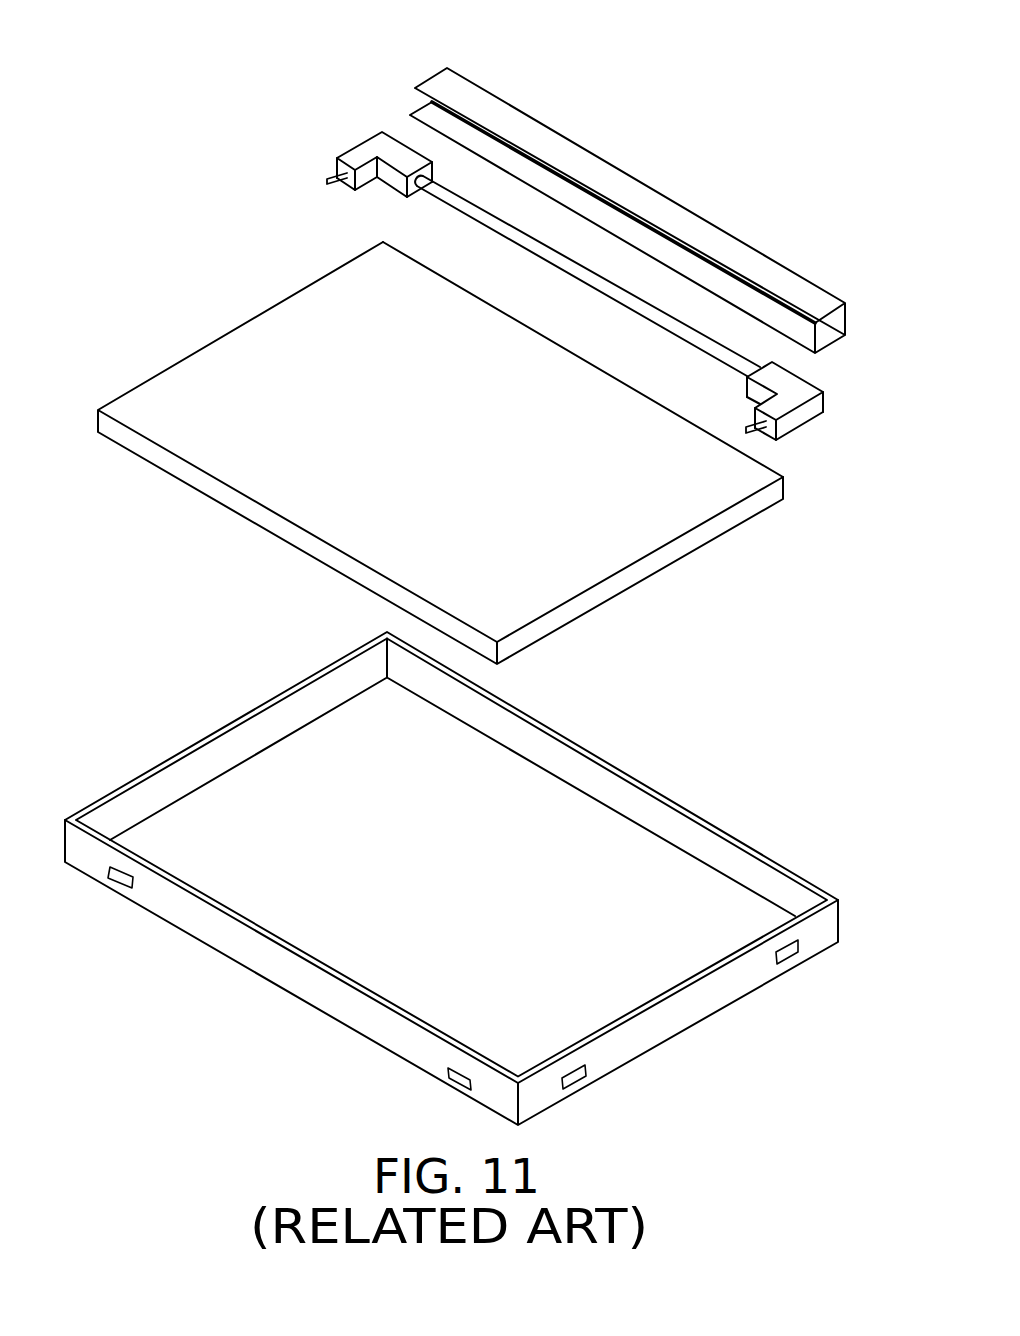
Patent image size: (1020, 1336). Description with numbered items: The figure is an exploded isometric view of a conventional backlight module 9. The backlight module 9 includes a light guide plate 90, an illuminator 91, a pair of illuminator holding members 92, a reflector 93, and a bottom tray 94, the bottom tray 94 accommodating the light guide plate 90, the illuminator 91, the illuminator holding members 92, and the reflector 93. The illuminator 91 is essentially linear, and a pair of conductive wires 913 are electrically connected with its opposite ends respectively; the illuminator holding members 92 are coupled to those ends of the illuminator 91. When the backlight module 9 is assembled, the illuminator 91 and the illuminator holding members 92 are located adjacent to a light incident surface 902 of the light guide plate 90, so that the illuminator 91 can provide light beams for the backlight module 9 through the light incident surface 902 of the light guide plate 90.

The backlight module 9 is at (363, 28).
The light guide plate 90 is at (233, 314).
The light incident surface 902 is at (778, 460).
The illuminator 91 is at (453, 198).
The illuminator holding members 92 is at (365, 150).
The conductive wires 913 is at (333, 175).
The reflector 93 is at (567, 160).
The bottom tray 94 is at (648, 887).